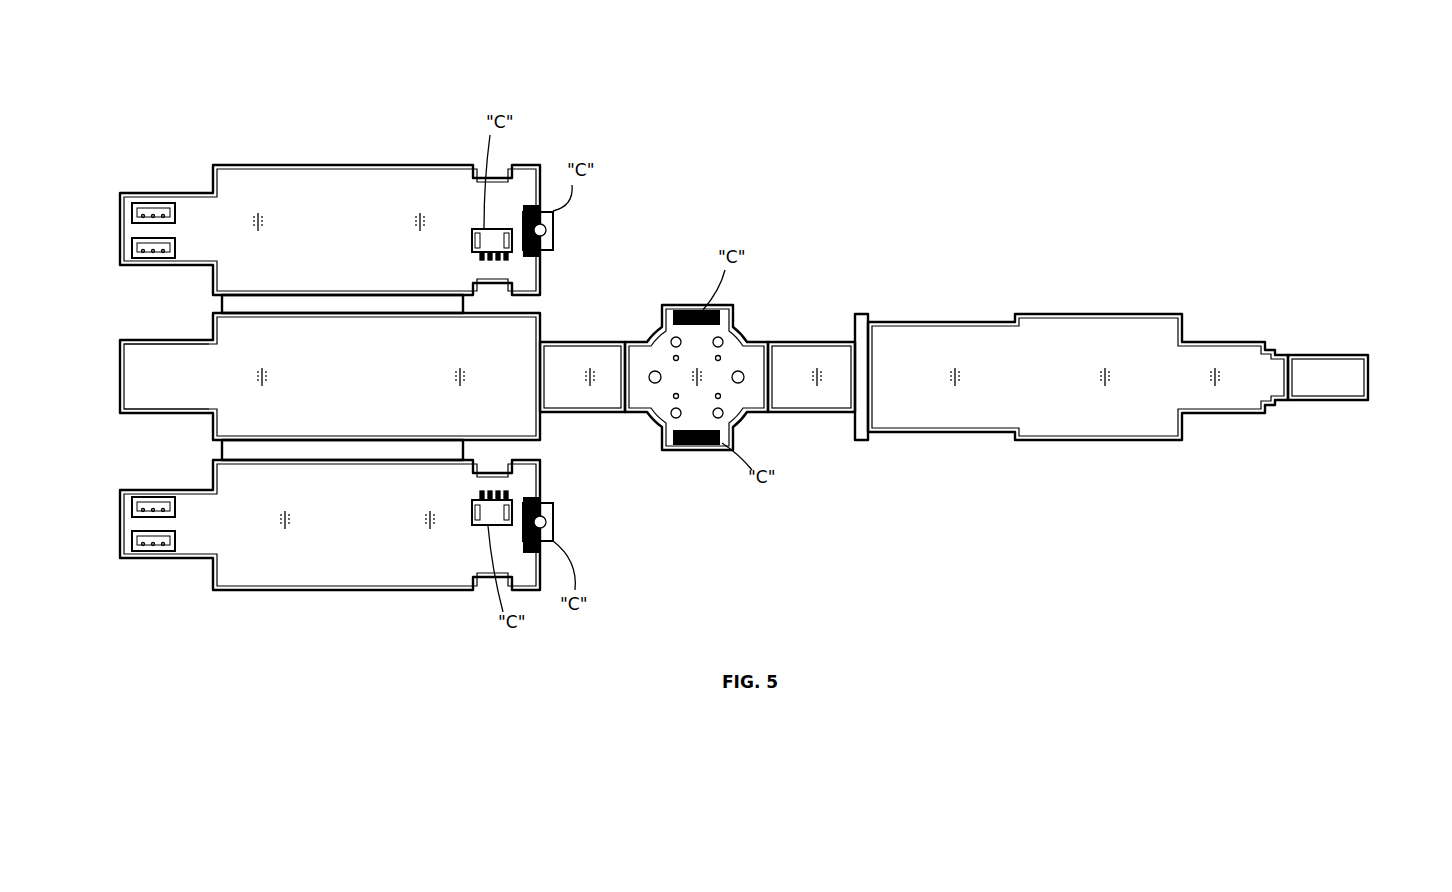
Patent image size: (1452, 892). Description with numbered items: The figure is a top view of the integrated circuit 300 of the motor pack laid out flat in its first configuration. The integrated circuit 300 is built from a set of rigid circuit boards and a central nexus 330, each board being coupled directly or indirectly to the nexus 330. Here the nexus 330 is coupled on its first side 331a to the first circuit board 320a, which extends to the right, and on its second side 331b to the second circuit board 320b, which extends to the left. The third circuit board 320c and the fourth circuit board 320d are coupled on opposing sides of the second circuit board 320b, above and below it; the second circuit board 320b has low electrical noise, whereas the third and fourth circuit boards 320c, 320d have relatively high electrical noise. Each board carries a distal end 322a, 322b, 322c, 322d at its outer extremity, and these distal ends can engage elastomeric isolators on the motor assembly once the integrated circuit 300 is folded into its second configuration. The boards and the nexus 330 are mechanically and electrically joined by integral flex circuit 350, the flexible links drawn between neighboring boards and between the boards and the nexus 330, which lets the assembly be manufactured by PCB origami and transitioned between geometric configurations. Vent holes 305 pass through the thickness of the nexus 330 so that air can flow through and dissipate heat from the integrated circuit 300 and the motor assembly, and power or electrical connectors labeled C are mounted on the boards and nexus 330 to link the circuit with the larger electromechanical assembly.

The integrated circuit 300 is at (684, 112).
The vent holes 305 is at (654, 371).
The first circuit board 320a is at (1080, 441).
The second circuit board 320b is at (540, 428).
The third circuit board 320c is at (375, 165).
The fourth circuit board 320d is at (330, 590).
The distal end of first circuit board 322a is at (1370, 378).
The distal end of second circuit board 322b is at (120, 378).
The distal end of third circuit board 322c is at (120, 228).
The distal end of fourth circuit board 322d is at (120, 532).
The nexus 330 is at (742, 338).
The first side of nexus 331a is at (768, 346).
The second side of nexus 331b is at (632, 373).
The integral flex circuit 350 is at (222, 304).